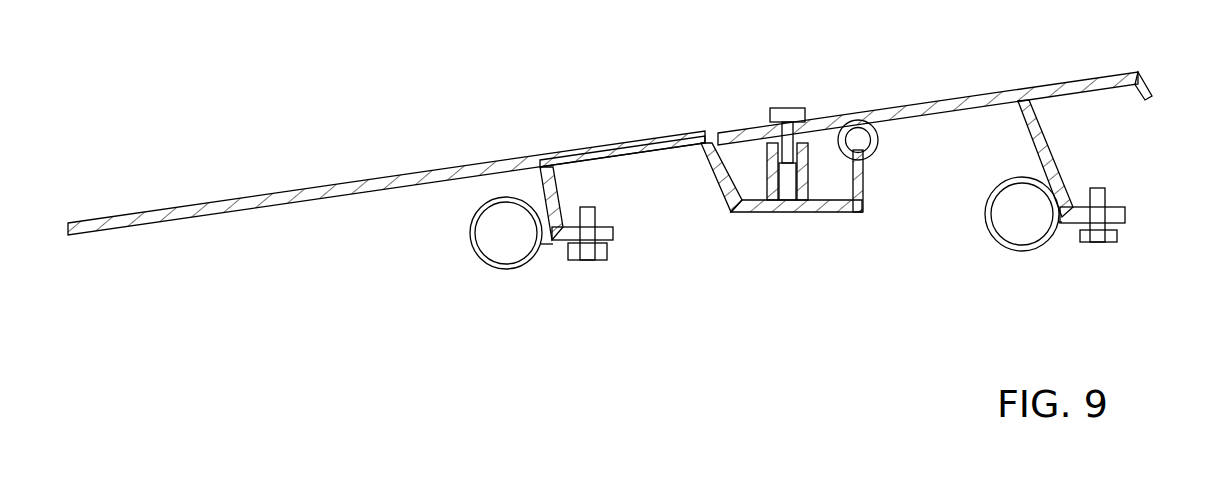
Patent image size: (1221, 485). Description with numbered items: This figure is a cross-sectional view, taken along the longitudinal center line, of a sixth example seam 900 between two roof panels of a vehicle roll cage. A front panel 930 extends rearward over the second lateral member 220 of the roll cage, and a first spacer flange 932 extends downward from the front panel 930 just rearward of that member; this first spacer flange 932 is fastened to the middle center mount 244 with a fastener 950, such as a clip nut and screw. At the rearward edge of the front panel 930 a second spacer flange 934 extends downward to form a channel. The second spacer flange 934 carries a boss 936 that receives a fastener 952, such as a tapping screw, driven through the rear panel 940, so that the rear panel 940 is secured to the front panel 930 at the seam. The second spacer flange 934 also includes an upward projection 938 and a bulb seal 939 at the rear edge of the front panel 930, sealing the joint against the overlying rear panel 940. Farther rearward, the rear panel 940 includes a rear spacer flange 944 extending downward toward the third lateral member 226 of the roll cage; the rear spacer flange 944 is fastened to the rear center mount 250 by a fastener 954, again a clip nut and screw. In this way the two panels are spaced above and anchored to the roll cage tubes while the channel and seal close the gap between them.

The seam 900 is at (214, 152).
The front panel 930 is at (590, 138).
The first spacer flange 932 is at (543, 184).
The second spacer flange 934 is at (755, 212).
The boss 936 is at (792, 200).
The upward projection 938 is at (853, 212).
The bulb seal 939 is at (873, 148).
The rear panel 940 is at (897, 91).
The rear spacer flange 944 is at (1050, 150).
The fastener 950 is at (588, 260).
The fastener 952 is at (783, 108).
The fastener 954 is at (1095, 242).
The second lateral member 220 is at (487, 255).
The third lateral member 226 is at (997, 243).
The middle center mount 244 is at (557, 240).
The rear center mount 250 is at (1073, 225).